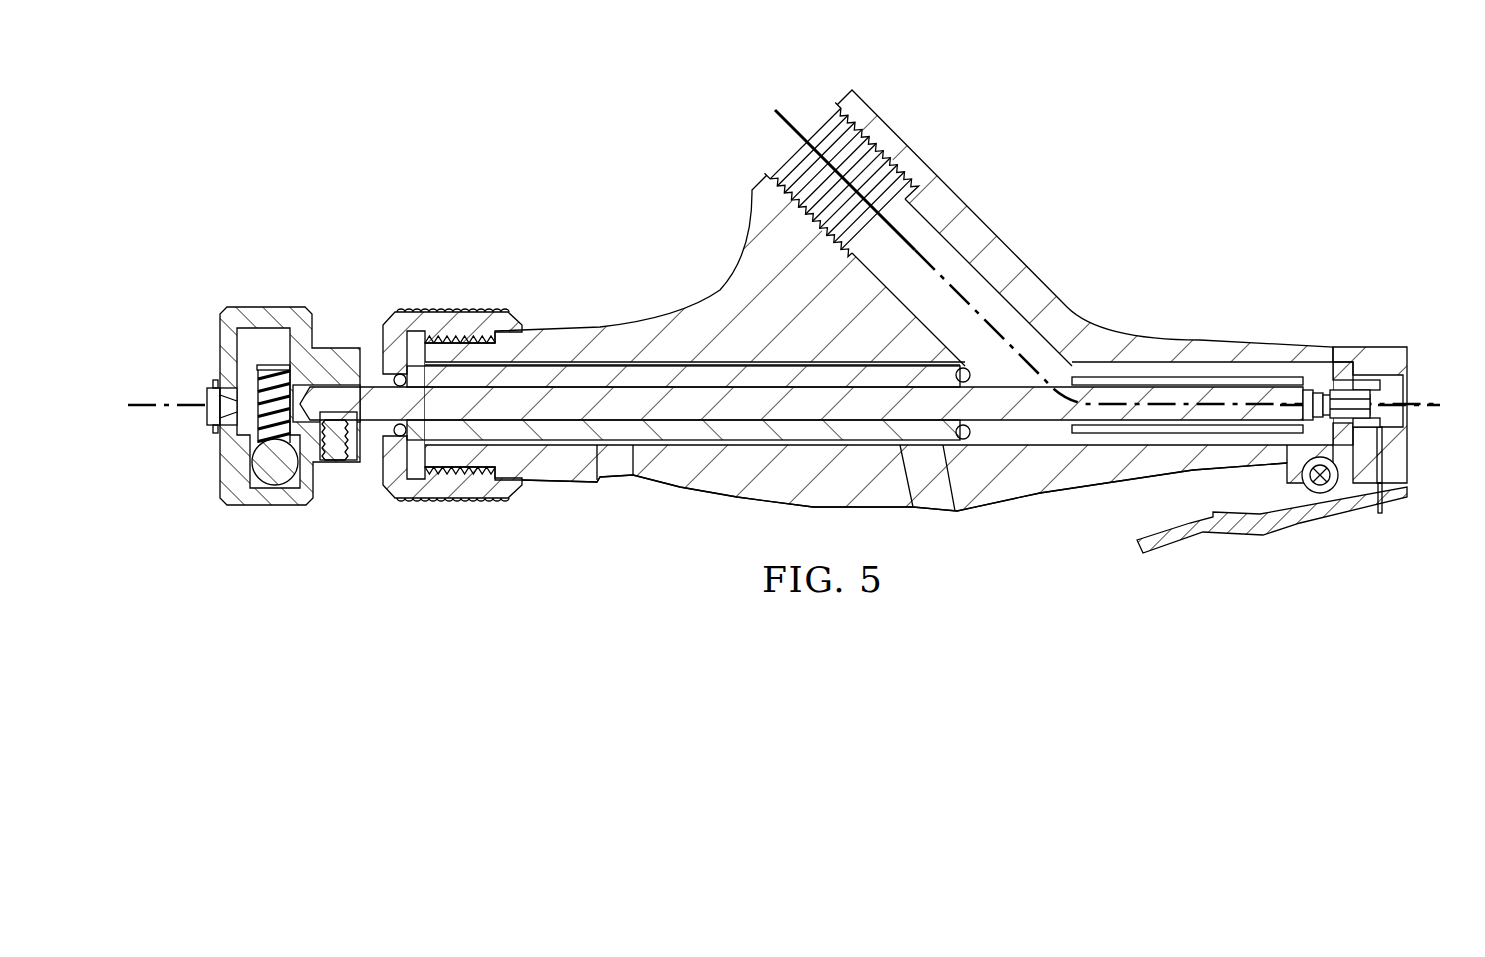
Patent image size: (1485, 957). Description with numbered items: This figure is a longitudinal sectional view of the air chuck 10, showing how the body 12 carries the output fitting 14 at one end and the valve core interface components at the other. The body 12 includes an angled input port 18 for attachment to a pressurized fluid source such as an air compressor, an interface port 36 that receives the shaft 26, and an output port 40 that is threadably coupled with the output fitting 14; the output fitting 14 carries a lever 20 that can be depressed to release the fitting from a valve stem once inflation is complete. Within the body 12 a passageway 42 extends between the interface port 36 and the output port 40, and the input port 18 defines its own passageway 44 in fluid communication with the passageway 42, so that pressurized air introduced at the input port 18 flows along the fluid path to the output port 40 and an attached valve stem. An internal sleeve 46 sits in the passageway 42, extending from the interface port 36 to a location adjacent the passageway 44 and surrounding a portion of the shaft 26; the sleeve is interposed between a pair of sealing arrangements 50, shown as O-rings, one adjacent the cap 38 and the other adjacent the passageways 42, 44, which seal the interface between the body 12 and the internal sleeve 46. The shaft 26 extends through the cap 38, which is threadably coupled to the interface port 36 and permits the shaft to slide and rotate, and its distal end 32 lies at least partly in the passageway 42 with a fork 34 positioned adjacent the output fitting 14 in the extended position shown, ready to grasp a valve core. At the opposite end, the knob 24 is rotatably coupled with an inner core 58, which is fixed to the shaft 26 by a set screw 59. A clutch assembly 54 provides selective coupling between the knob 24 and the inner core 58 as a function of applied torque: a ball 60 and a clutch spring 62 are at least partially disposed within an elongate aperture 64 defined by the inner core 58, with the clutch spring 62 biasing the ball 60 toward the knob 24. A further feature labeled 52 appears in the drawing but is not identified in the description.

The air chuck 10 is at (1100, 84).
The body 12 is at (660, 182).
The output fitting 14 is at (1382, 315).
The input port 18 is at (773, 145).
The lever 20 is at (1232, 528).
The knob 24 is at (192, 255).
The shaft 26 is at (680, 412).
The distal end 32 is at (1335, 285).
The fork 34 is at (1383, 412).
The interface port 36 is at (522, 430).
The cap 38 is at (455, 310).
The output port 40 is at (1393, 388).
The passageway 42 is at (400, 372).
The passageway 44 is at (943, 260).
The internal sleeve 46 is at (807, 443).
The sealing arrangements 50 is at (383, 345).
The housing underside 52 is at (731, 483).
The clutch assembly 54 is at (245, 380).
The inner core 58 is at (287, 340).
The set screw 59 is at (337, 466).
The ball 60 is at (295, 485).
The clutch spring 62 is at (250, 400).
The elongate aperture 64 is at (280, 372).